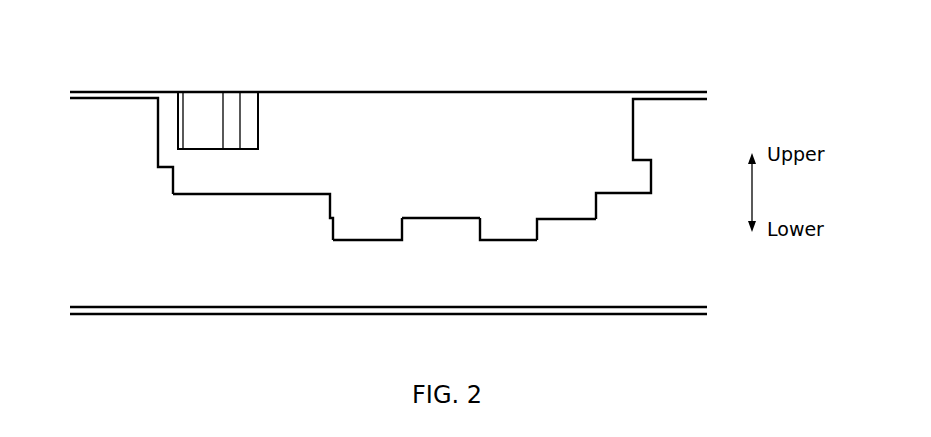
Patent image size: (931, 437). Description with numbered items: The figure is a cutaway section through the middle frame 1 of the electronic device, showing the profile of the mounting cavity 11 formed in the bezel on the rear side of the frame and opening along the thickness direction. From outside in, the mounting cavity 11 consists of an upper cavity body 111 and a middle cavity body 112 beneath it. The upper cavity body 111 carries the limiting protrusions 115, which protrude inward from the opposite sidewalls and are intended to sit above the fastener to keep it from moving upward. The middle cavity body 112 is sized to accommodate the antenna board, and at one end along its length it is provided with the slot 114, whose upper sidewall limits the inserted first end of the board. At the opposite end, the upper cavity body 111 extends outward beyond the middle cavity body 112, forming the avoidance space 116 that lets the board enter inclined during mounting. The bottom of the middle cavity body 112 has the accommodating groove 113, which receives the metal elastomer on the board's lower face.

The middle frame 1 is at (240, 287).
The mounting cavity 11 is at (371, 48).
The upper cavity body 111 is at (448, 122).
The middle cavity body 112 is at (273, 177).
The accommodating groove 113 is at (372, 226).
The slot 114 is at (640, 180).
The limiting protrusion 115 is at (208, 102).
The avoidance space 116 is at (168, 155).